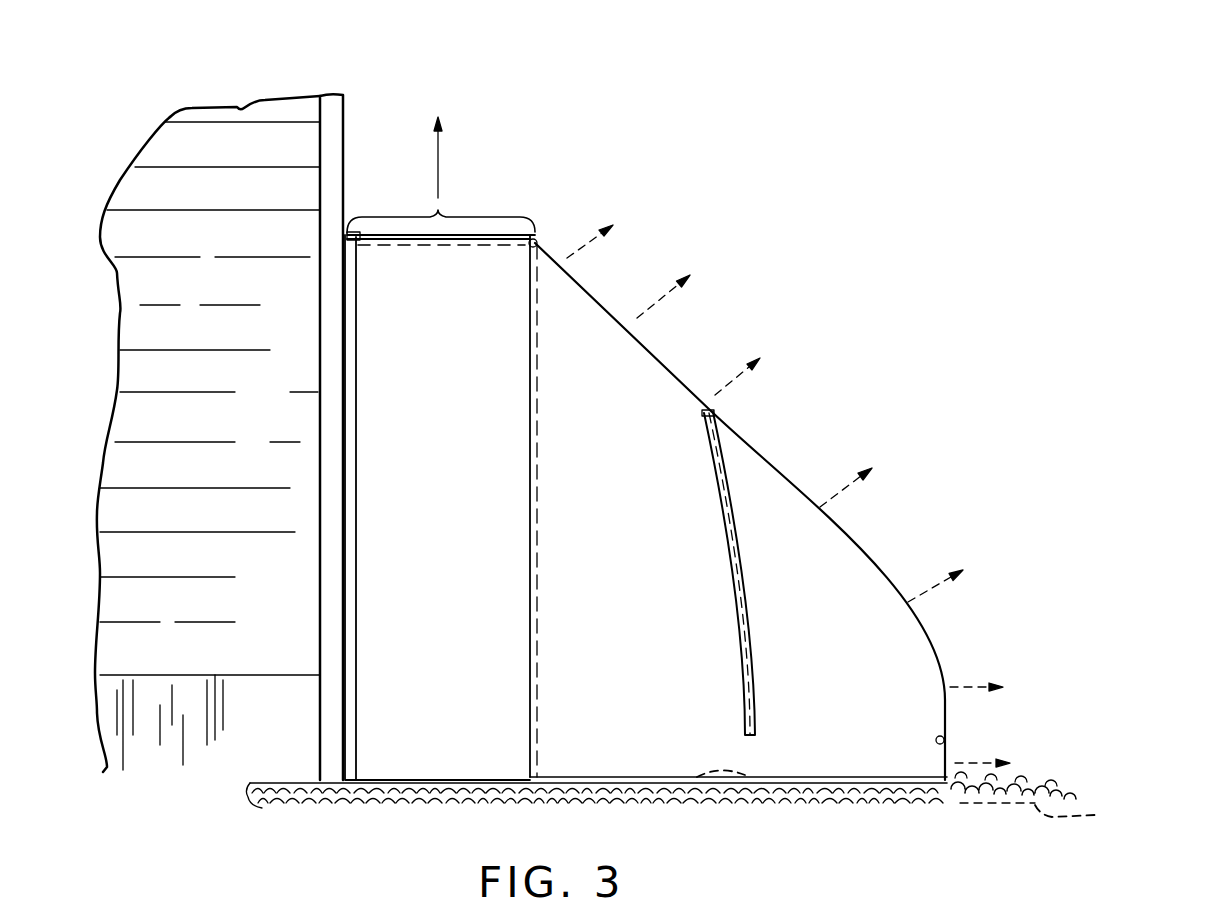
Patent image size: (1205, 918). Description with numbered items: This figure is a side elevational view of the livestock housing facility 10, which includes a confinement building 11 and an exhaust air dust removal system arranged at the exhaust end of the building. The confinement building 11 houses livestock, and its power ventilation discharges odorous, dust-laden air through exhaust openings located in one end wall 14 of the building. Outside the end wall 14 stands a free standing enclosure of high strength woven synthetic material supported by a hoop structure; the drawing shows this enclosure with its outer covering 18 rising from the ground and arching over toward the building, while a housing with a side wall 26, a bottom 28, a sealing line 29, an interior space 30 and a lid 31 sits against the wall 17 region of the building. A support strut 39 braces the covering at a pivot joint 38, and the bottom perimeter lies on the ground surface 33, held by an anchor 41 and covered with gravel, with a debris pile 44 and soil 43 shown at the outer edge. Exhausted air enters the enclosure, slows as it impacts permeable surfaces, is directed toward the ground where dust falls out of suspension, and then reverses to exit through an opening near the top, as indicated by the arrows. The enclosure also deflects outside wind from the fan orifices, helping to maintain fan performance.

The livestock housing facility 10 is at (828, 222).
The confinement building 11 is at (236, 92).
The end wall 14 is at (345, 132).
The building wall 17 is at (157, 198).
The flexible cover 18 is at (648, 348).
The housing side wall 26 is at (357, 398).
The housing bottom 28 is at (527, 700).
The lid seal 29 is at (474, 250).
The housing interior 30 is at (432, 477).
The lid 31 is at (470, 231).
The ground surface 33 is at (415, 747).
The pivot joint 38 is at (715, 410).
The support strut 39 is at (740, 625).
The anchor 41 is at (752, 811).
The soil 43 is at (1090, 815).
The debris pile 44 is at (1035, 790).